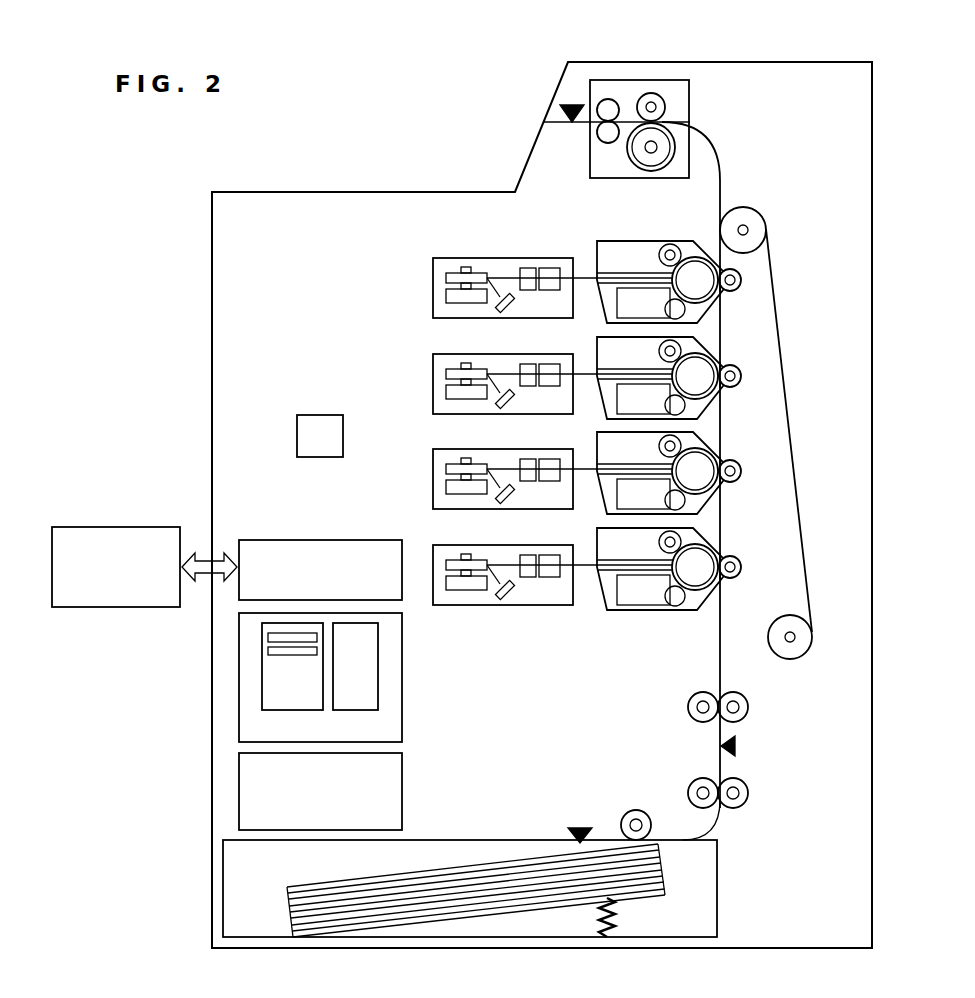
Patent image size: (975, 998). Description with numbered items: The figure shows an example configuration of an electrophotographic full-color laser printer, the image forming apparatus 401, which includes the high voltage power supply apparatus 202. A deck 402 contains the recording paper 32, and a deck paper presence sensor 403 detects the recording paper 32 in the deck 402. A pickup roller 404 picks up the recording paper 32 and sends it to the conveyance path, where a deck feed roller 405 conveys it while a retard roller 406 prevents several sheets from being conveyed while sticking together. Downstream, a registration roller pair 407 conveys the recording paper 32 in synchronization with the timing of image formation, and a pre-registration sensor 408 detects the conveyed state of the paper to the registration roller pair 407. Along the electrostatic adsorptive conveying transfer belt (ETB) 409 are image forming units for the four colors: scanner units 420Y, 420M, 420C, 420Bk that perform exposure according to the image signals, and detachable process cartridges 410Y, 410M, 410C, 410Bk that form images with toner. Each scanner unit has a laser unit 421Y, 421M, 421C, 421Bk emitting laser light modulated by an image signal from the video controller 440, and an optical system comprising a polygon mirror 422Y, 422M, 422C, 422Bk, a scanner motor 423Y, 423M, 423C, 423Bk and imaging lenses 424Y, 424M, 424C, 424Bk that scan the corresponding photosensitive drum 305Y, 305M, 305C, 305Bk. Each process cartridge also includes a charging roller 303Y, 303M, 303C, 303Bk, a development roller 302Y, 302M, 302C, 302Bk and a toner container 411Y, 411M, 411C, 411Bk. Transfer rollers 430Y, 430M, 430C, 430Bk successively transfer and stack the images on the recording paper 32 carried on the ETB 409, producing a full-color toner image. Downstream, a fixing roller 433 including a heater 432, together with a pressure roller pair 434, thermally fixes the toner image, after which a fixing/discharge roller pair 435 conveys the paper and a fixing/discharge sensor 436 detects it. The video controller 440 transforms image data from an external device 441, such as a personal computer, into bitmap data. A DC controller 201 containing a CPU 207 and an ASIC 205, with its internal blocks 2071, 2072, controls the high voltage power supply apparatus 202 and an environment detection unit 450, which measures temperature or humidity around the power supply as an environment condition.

The image forming apparatus 401 is at (805, 62).
The deck 402 is at (717, 922).
The deck paper presence sensor 403 is at (580, 826).
The pickup roller 404 is at (627, 811).
The deck feed roller 405 is at (688, 795).
The retard roller 406 is at (748, 793).
The registration roller pair 407 is at (748, 707).
The pre-registration sensor 408 is at (737, 746).
The electrostatic adsorptive conveying transfer belt (ETB) 409 is at (801, 508).
The process cartridge (black) 410Bk is at (598, 243).
The process cartridge (cyan) 410C is at (624, 371).
The process cartridge (magenta) 410M is at (596, 470).
The process cartridge (yellow) 410Y is at (644, 588).
The toner container (black) 411Bk is at (624, 288).
The toner container (cyan) 411C is at (602, 412).
The toner container (magenta) 411M is at (601, 509).
The toner container (yellow) 411Y is at (635, 625).
The scanner unit (black) 420Bk is at (447, 258).
The scanner unit (cyan) 420C is at (486, 364).
The scanner unit (magenta) 420M is at (535, 464).
The scanner unit (yellow) 420Y is at (553, 620).
The laser unit (black) 421Bk is at (497, 303).
The laser unit (cyan) 421C is at (435, 397).
The laser unit (magenta) 421M is at (431, 491).
The laser unit (yellow) 421Y is at (491, 617).
The polygon mirror (black) 422Bk is at (446, 275).
The polygon mirror (cyan) 422C is at (416, 365).
The polygon mirror (magenta) 422M is at (416, 458).
The polygon mirror (yellow) 422Y is at (433, 542).
The scanner motor (black) 423Bk is at (446, 296).
The scanner motor (cyan) 423C is at (411, 384).
The scanner motor (magenta) 423M is at (408, 478).
The scanner motor (yellow) 423Y is at (453, 610).
The imaging lenses (black) 424Bk is at (522, 268).
The imaging lenses (cyan) 424C is at (511, 355).
The imaging lenses (magenta) 424M is at (510, 499).
The imaging lenses (yellow) 424Y is at (530, 598).
The transfer roller (black) 430Bk is at (738, 270).
The transfer roller (cyan) 430C is at (781, 373).
The transfer roller (magenta) 430M is at (791, 472).
The transfer roller (yellow) 430Y is at (760, 561).
The development roller (black) 302Bk is at (708, 300).
The development roller (cyan) 302C is at (729, 388).
The development roller (magenta) 302M is at (731, 481).
The development roller (yellow) 302Y is at (686, 596).
The charging roller (black) 303Bk is at (675, 237).
The charging roller (cyan) 303C is at (723, 345).
The charging roller (magenta) 303M is at (725, 439).
The charging roller (yellow) 303Y is at (722, 535).
The photosensitive drum (black) 305Bk is at (722, 296).
The photosensitive drum (cyan) 305C is at (784, 385).
The photosensitive drum (magenta) 305M is at (792, 457).
The photosensitive drum (yellow) 305Y is at (754, 580).
The heater 432 is at (640, 158).
The fixing roller 433 is at (655, 165).
The pressure roller pair 434 is at (666, 107).
The fixing/discharge roller pair 435 is at (597, 137).
The fixing/discharge sensor 436 is at (566, 106).
The video controller 440 is at (253, 540).
The external device 441 is at (72, 527).
The environment detection unit 450 is at (303, 415).
The DC controller 201 is at (402, 735).
The high voltage power supply apparatus 202 is at (402, 815).
The ASIC 205 is at (378, 695).
The CPU 207 is at (262, 696).
The ROM 2071 is at (268, 637).
The RAM 2072 is at (268, 651).
The recording paper 32 is at (378, 927).